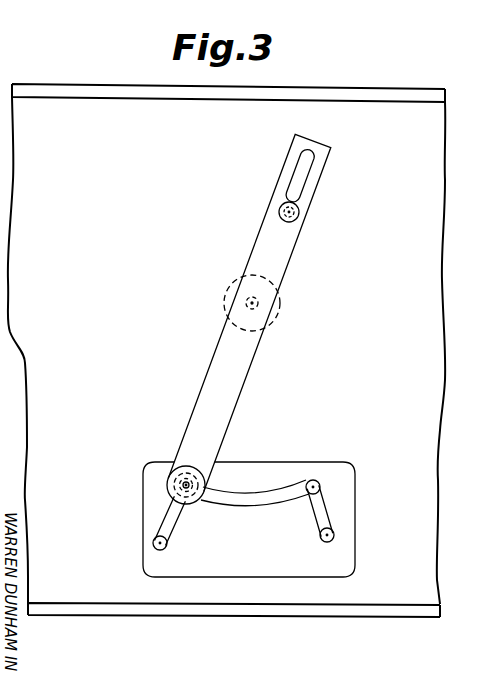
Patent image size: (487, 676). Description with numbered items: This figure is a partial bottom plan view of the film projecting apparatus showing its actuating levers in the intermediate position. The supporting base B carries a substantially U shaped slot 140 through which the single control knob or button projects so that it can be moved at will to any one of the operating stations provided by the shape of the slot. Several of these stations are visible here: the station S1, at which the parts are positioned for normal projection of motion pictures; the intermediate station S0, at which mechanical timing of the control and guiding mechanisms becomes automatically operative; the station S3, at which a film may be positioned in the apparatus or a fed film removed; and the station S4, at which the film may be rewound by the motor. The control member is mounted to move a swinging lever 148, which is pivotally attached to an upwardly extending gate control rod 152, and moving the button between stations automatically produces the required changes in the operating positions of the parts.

The supporting base B is at (258, 481).
The U shaped slot 140 is at (256, 492).
The swinging lever 148 is at (250, 366).
The gate control rod 152 is at (259, 303).
The intermediate station S0 is at (172, 485).
The station S1 is at (167, 541).
The station S3 is at (320, 484).
The station S4 is at (320, 537).